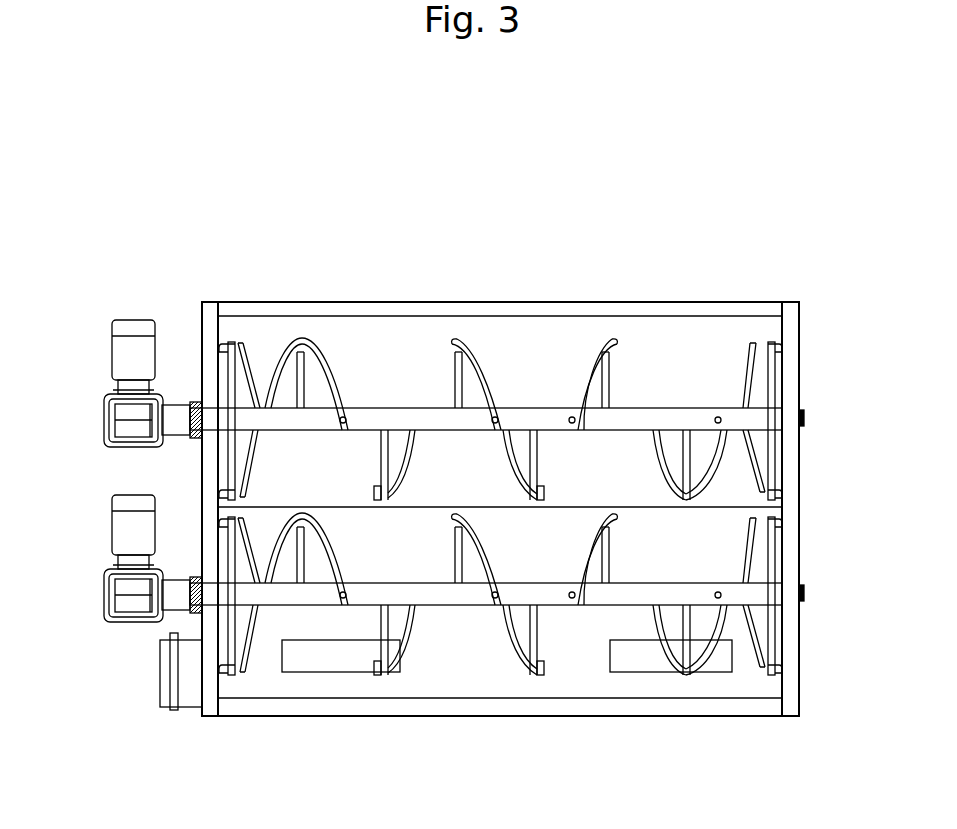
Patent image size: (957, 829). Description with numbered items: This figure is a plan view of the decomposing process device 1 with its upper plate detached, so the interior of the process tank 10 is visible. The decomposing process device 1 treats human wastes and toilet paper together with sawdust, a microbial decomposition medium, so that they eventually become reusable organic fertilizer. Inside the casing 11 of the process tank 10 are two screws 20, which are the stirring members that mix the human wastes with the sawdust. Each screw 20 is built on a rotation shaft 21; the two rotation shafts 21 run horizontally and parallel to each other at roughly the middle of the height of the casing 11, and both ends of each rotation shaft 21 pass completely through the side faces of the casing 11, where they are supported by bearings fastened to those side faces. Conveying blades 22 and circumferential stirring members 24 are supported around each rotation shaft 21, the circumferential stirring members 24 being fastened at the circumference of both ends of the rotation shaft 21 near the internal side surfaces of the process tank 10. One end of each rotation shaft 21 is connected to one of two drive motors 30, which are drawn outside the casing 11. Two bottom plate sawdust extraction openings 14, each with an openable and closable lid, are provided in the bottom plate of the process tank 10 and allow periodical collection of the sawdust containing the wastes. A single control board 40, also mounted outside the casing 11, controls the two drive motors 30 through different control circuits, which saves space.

The decomposing process device 1 is at (652, 310).
The process tank 10 is at (703, 310).
The casing 11 is at (788, 380).
The bottom plate sawdust extraction opening 14 is at (333, 656).
The screw 20 is at (508, 422).
The rotation shaft 21 is at (541, 430).
The conveying blade 22 is at (583, 350).
The circumferential stirring member 24 is at (752, 345).
The drive motor 30 is at (128, 418).
The control board 40 is at (152, 680).